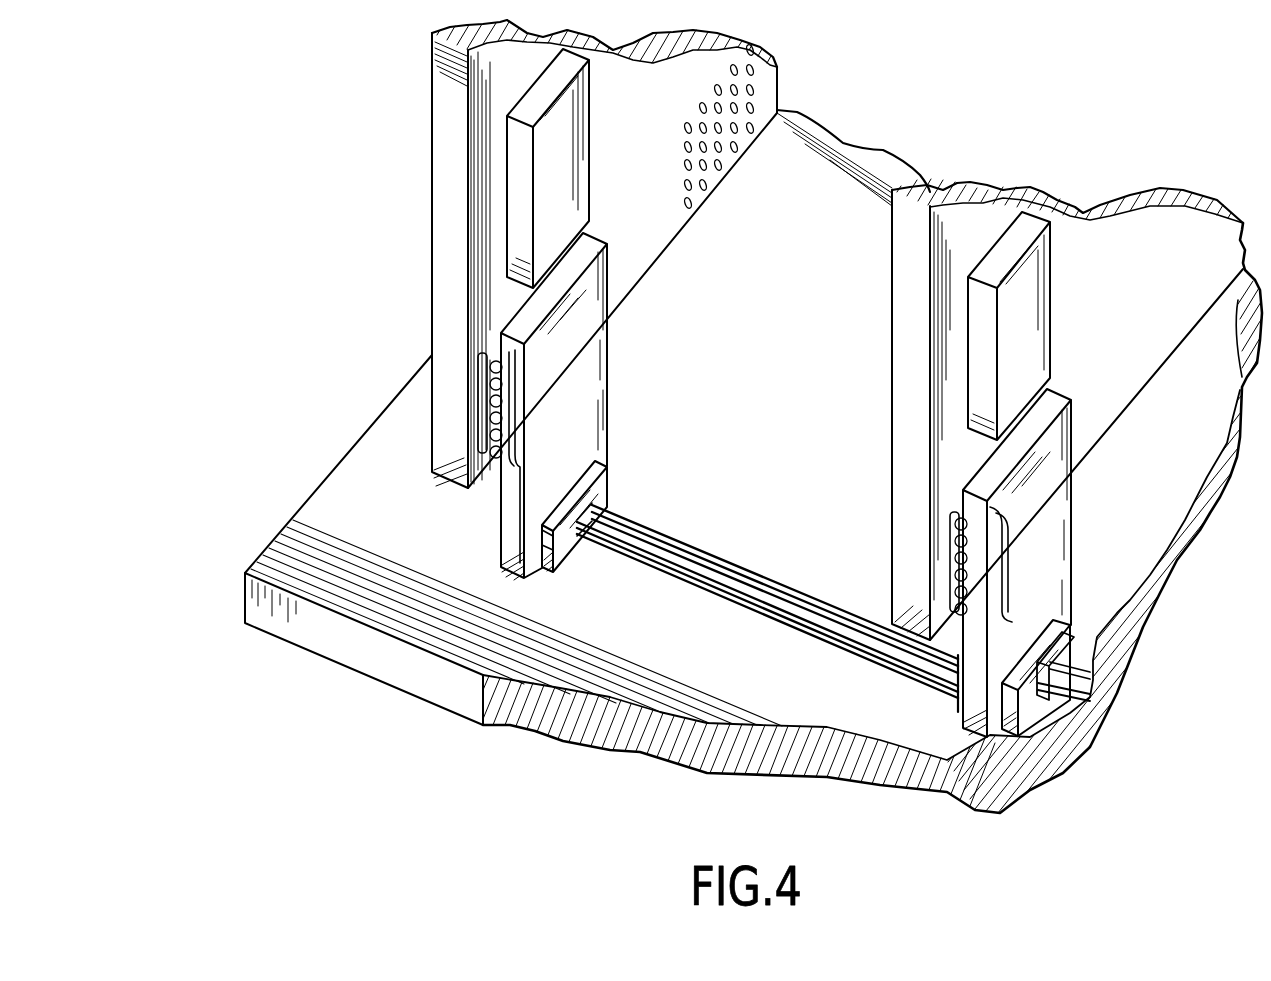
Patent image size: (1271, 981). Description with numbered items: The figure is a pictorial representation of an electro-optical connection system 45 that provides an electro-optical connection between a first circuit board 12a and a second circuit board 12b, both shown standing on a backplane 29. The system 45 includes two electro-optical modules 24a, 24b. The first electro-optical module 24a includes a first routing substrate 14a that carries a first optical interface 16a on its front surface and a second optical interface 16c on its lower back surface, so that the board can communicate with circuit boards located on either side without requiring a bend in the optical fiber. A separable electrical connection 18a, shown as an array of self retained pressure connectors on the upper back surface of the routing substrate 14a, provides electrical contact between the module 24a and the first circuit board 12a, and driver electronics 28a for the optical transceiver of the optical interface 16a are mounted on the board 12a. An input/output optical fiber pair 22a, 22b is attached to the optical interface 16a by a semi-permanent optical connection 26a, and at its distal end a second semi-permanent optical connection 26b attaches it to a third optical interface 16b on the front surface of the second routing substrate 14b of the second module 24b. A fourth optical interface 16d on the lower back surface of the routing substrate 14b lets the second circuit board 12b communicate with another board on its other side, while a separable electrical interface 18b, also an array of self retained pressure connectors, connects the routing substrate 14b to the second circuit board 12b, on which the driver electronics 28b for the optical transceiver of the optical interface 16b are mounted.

The electro-optical connection system 45 is at (301, 139).
The first circuit board 12a is at (447, 190).
The second circuit board 12b is at (1082, 235).
The first routing substrate 14a is at (518, 322).
The second routing substrate 14b is at (1050, 398).
The first optical interface 16a is at (546, 562).
The third optical interface 16b is at (983, 705).
The second optical interface 16c is at (500, 510).
The fourth optical interface 16d is at (1043, 647).
The separable electrical connection 18a is at (480, 403).
The separable electrical interface 18b is at (964, 556).
The optical fiber 22a is at (673, 567).
The optical fiber 22b is at (748, 573).
The first electro-optical module 24a is at (517, 460).
The second electro-optical module 24b is at (1003, 605).
The semi-permanent optical connection 26a is at (585, 555).
The second semi-permanent optical connection 26b is at (960, 693).
The driver electronics 28a is at (533, 108).
The driver electronics 28b is at (1010, 257).
The backplane 29 is at (285, 555).